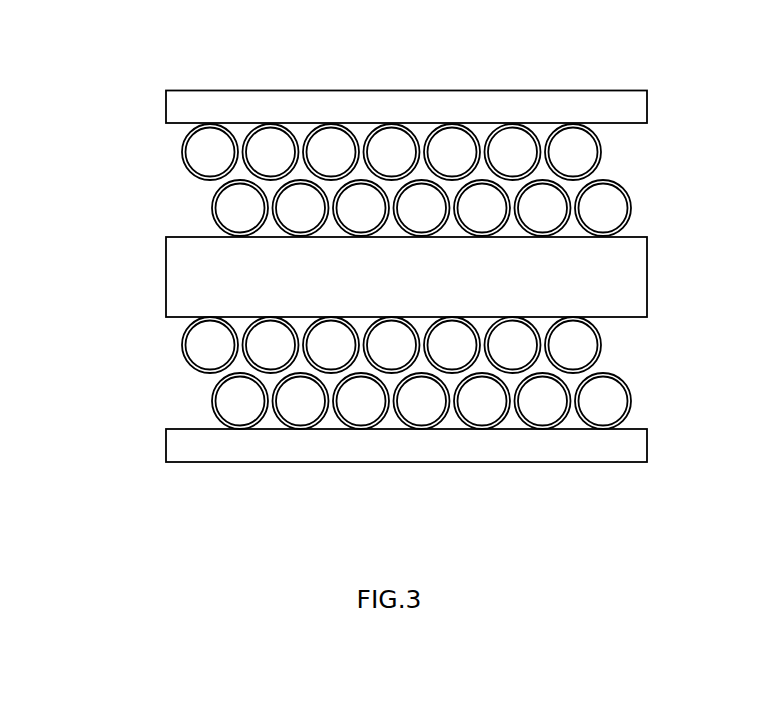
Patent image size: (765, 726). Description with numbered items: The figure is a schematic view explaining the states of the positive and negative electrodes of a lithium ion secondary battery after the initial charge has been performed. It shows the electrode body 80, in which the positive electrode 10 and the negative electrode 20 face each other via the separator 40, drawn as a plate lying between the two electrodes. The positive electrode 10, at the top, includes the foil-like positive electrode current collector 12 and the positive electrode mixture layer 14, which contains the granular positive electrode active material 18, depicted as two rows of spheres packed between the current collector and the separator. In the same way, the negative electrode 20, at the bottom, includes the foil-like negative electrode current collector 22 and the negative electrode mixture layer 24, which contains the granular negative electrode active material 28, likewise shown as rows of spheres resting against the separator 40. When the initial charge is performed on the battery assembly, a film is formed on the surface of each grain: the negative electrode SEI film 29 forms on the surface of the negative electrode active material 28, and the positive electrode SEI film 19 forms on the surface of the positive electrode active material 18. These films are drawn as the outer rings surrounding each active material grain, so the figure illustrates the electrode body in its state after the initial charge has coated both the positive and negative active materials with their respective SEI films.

The electrode body 80 is at (688, 41).
The positive electrode 10 is at (97, 95).
The positive electrode current collector 12 is at (171, 110).
The positive electrode mixture layer 14 is at (155, 135).
The positive electrode active material 18 is at (610, 201).
The positive electrode SEI film 19 is at (600, 152).
The separator 40 is at (175, 277).
The negative electrode 20 is at (97, 357).
The negative electrode current collector 22 is at (171, 441).
The negative electrode mixture layer 24 is at (155, 328).
The negative electrode active material 28 is at (610, 391).
The negative electrode SEI film 29 is at (600, 342).